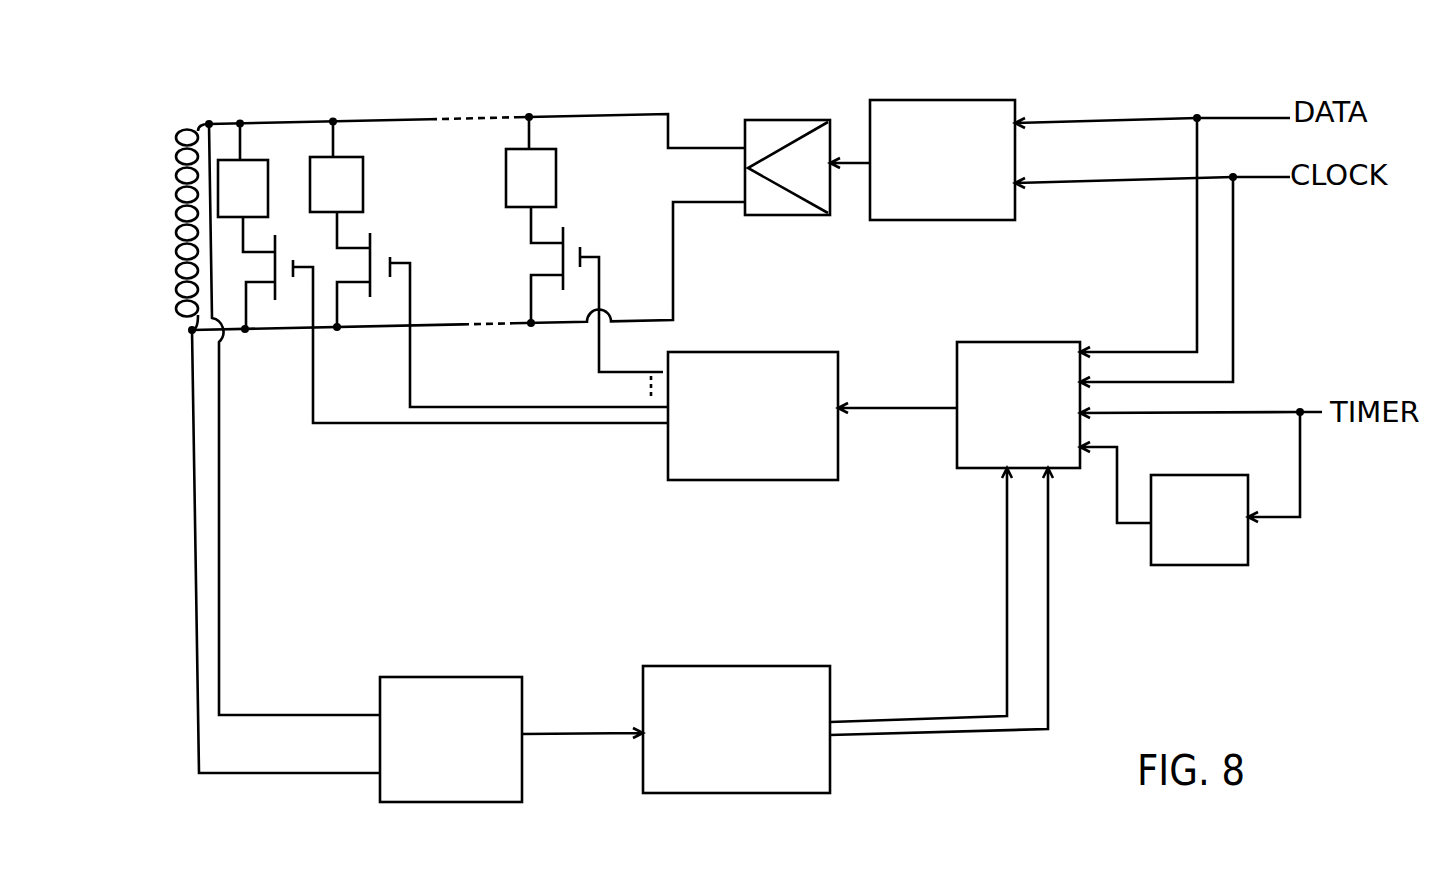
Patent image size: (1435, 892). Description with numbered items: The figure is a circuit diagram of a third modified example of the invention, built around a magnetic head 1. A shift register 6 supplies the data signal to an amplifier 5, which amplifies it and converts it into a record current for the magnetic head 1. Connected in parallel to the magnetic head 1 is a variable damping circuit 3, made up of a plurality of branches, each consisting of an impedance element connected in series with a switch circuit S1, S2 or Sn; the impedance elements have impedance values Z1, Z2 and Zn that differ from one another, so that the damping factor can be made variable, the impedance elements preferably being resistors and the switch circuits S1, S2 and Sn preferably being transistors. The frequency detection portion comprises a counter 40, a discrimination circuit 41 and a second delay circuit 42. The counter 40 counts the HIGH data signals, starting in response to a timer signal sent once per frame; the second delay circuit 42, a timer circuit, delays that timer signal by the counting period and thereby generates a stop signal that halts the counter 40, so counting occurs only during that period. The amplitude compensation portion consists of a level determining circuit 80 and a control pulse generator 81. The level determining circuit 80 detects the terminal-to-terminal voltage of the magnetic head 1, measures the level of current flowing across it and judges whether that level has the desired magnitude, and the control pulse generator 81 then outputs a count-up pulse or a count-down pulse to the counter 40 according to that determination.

The magnetic head 1 is at (184, 113).
The variable damping circuit 3 is at (466, 211).
The amplifier 5 is at (786, 120).
The shift register 6 is at (978, 100).
The counter 40 is at (1015, 342).
The discrimination circuit 41 is at (757, 352).
The second delay circuit 42 is at (1213, 568).
The level determining circuit 80 is at (440, 677).
The control pulse generator 81 is at (722, 666).
The impedance value Z1 is at (268, 163).
The impedance value Z2 is at (363, 160).
The impedance value Zn is at (556, 155).
The switch circuit S1 is at (457, 322).
The switch circuit S2 is at (502, 314).
The switch circuit Sn is at (597, 305).